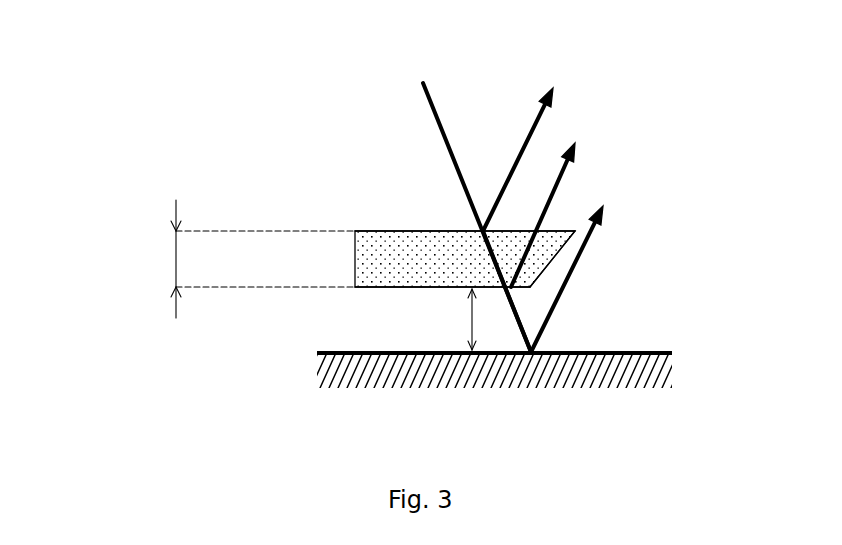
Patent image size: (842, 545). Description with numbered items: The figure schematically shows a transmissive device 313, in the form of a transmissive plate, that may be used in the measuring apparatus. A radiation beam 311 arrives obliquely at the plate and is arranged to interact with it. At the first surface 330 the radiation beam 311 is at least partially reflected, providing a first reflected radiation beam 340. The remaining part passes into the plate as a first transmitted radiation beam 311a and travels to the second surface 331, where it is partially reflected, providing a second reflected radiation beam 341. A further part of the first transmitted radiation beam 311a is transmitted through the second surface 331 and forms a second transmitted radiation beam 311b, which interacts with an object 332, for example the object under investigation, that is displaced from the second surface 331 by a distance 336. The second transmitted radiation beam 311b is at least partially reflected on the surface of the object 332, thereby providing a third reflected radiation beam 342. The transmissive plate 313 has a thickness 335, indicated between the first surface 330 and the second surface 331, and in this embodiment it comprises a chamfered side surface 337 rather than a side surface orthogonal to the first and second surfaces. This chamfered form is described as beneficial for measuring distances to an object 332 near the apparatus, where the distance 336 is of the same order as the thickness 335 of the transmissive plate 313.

The radiation beam 311 is at (448, 158).
The first transmitted radiation beam 311a is at (490, 258).
The second transmitted radiation beam 311b is at (518, 315).
The transmissive device 313 is at (385, 260).
The first surface 330 is at (383, 231).
The second surface 331 is at (383, 287).
The object 332 is at (323, 377).
The thickness 335 is at (176, 262).
The distance 336 is at (472, 322).
The chamfered side surface 337 is at (547, 258).
The first reflected radiation beam 340 is at (538, 115).
The second reflected radiation beam 341 is at (560, 180).
The third reflected radiation beam 342 is at (568, 288).